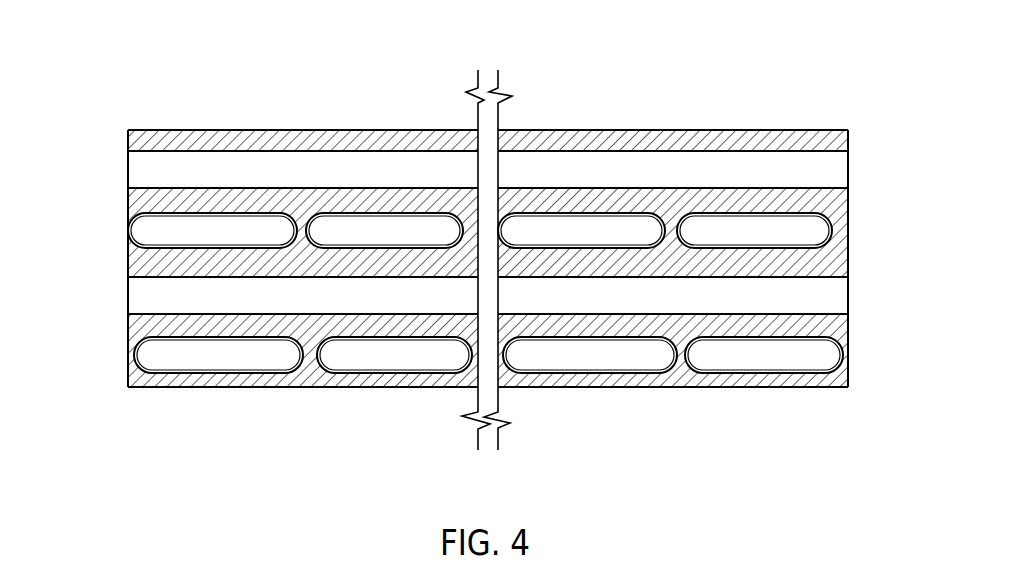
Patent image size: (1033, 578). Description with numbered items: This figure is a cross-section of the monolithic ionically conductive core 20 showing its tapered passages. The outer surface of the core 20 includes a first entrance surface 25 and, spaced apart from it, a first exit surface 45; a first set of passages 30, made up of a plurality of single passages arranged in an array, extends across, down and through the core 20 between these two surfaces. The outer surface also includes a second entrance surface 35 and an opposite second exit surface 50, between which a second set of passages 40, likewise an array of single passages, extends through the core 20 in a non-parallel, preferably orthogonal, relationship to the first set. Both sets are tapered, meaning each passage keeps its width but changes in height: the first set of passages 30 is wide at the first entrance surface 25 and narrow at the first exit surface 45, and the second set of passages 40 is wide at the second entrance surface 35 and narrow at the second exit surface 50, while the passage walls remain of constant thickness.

The monolithic ionically conductive core 20 is at (832, 257).
The first entrance surface 25 is at (848, 172).
The first set of passages 30 is at (140, 182).
The second entrance surface 35 is at (740, 375).
The second set of passages 40 is at (547, 228).
The first exit surface 45 is at (128, 163).
The second exit surface 50 is at (803, 345).